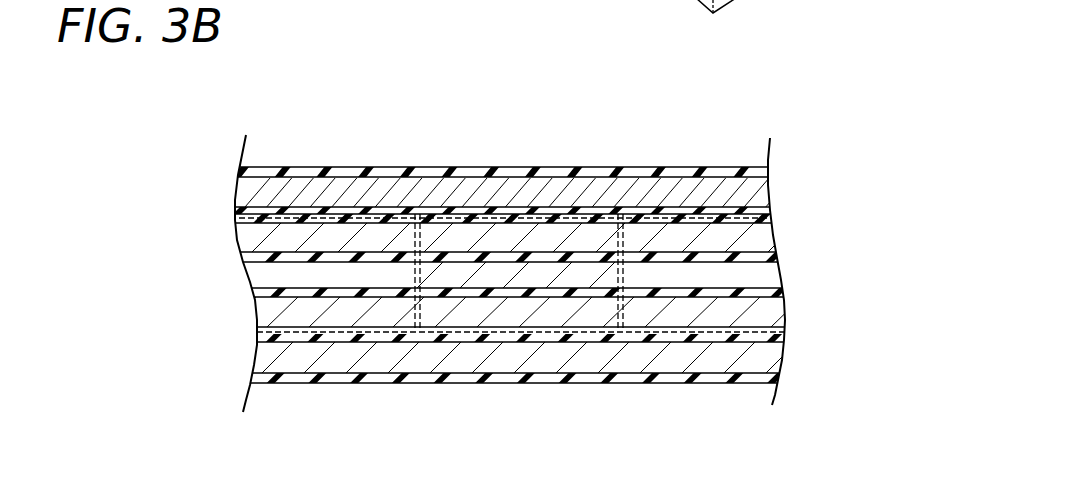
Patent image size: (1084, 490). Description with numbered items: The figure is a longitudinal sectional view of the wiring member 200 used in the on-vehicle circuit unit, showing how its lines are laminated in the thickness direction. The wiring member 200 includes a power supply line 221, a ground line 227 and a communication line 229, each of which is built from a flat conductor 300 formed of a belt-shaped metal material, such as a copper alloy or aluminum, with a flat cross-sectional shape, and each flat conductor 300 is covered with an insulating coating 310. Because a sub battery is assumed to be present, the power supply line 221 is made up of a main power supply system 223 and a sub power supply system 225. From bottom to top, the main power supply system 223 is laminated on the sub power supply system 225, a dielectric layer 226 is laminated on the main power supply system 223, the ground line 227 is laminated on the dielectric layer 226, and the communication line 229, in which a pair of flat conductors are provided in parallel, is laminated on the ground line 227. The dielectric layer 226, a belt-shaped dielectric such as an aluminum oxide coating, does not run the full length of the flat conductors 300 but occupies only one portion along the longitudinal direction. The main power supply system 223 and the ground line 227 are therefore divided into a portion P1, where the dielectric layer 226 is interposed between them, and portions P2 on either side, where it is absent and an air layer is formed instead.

The wiring member 200 is at (609, 138).
The flat conductor 300 is at (270, 360).
The insulating coating 310 is at (392, 255).
The communication line 229 is at (752, 193).
The ground line 227 is at (750, 238).
The dielectric layer 226 is at (620, 273).
The main power supply system 223 is at (750, 312).
The sub power supply system 225 is at (750, 358).
The power supply line 221 is at (888, 295).
The portion where the dielectric layer is interposed P1 is at (500, 218).
The portion where the dielectric layer is not interposed P2 is at (283, 218).